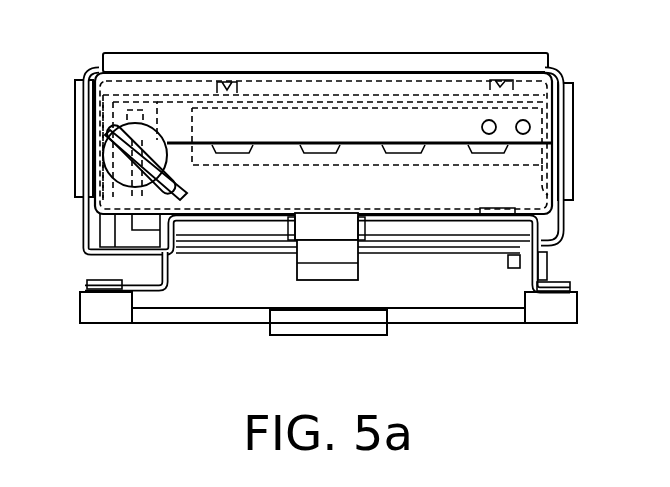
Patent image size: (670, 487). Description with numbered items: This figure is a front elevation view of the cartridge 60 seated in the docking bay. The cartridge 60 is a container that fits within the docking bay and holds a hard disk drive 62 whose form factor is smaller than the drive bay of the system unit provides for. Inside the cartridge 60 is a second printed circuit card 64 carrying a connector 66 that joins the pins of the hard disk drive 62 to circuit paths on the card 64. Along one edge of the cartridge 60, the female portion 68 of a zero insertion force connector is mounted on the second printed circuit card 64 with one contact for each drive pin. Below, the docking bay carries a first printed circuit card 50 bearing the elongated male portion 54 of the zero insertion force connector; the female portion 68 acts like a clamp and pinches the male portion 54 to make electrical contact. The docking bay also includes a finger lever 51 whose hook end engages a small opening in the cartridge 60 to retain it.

The first printed circuit card 50 is at (438, 250).
The finger lever 51 is at (333, 248).
The male portion of zero insertion force connector 54 is at (160, 185).
The cartridge 60 is at (533, 183).
The hard disk drive 62 is at (363, 128).
The second printed circuit card 64 is at (175, 97).
The connector 66 is at (271, 110).
The female portion of zero insertion force connector 68 is at (75, 190).